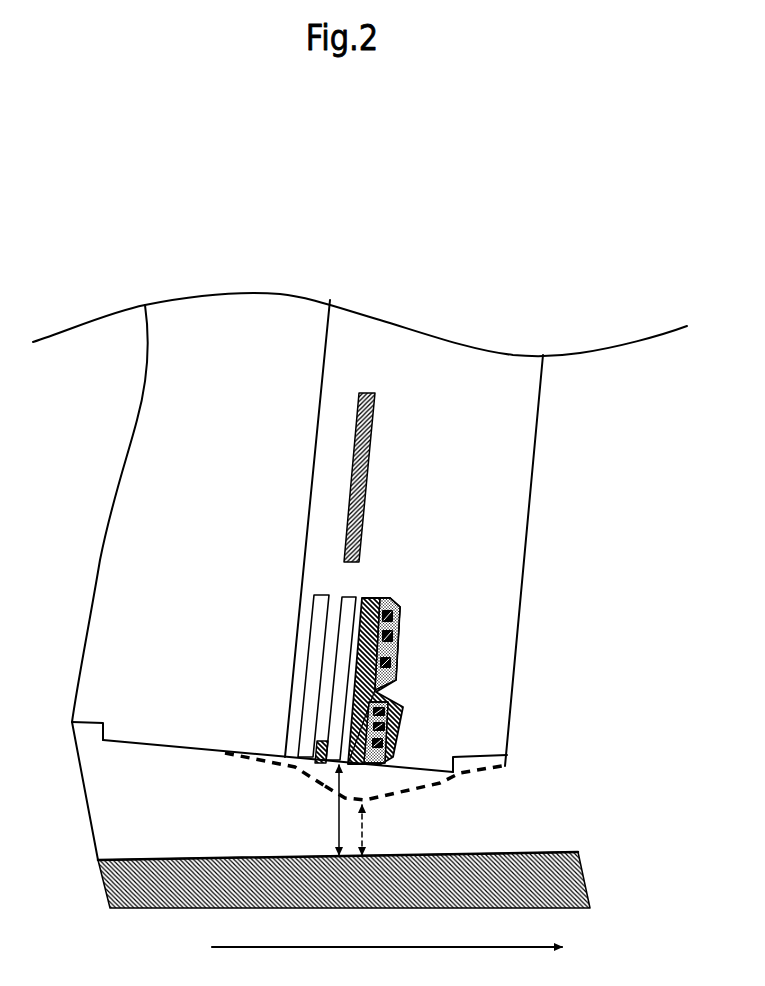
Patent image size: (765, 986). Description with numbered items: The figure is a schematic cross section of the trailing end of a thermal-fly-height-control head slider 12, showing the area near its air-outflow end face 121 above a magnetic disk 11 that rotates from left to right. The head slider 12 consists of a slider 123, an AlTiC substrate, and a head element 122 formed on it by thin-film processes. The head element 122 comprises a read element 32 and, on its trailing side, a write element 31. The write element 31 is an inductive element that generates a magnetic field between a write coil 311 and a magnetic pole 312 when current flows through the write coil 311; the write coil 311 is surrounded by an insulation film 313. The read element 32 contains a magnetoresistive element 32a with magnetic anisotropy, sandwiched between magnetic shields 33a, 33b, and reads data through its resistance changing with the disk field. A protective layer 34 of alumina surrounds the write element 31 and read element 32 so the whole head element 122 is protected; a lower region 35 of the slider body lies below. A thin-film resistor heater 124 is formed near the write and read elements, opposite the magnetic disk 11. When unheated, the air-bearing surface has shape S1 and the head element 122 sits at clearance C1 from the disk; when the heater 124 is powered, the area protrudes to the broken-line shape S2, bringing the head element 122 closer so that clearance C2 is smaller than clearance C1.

The magnetic disk 11 is at (523, 853).
The head slider 12 is at (448, 279).
The air-outflow end face 121 is at (538, 440).
The head element 122 is at (574, 563).
The slider 123 is at (86, 724).
The heater 124 is at (370, 490).
The write element 31 is at (411, 698).
The write coil 311 is at (400, 613).
The magnetic pole 312 is at (401, 723).
The insulation film 313 is at (398, 656).
The read element 32 is at (303, 771).
The magnetoresistive element 32a is at (320, 766).
The magnetic shield 33a is at (350, 596).
The magnetic shield 33b is at (312, 608).
The protective layer 34 is at (335, 383).
The lower side wall 35 is at (138, 748).
The ABS surface shape S1 is at (267, 761).
The protruding shape S2 is at (427, 797).
The clearance C1 is at (329, 810).
The clearance C2 is at (376, 830).